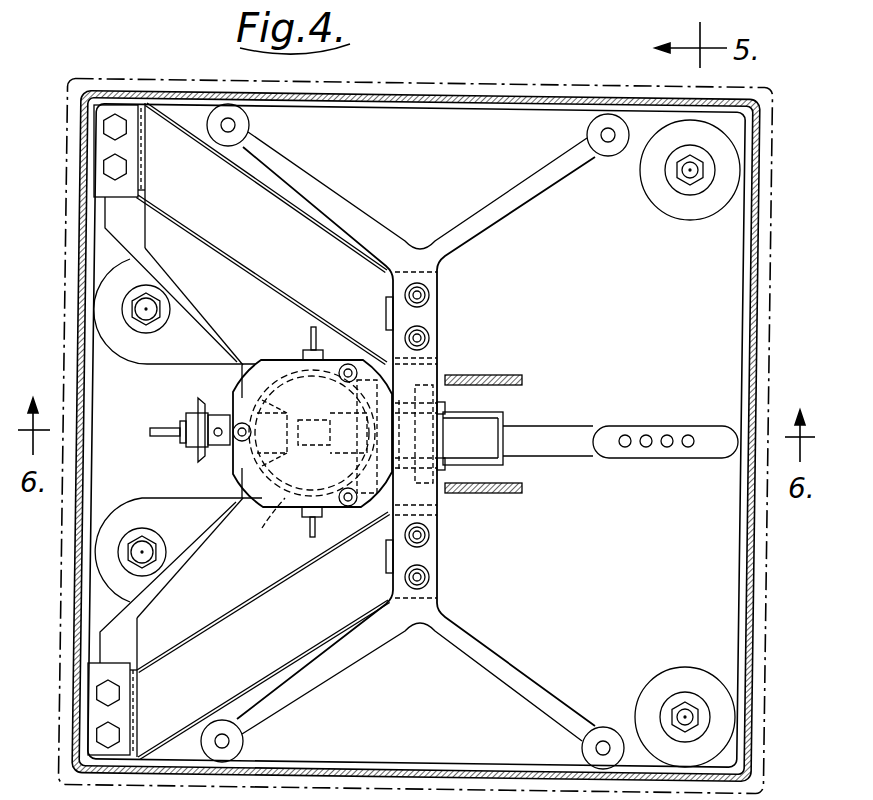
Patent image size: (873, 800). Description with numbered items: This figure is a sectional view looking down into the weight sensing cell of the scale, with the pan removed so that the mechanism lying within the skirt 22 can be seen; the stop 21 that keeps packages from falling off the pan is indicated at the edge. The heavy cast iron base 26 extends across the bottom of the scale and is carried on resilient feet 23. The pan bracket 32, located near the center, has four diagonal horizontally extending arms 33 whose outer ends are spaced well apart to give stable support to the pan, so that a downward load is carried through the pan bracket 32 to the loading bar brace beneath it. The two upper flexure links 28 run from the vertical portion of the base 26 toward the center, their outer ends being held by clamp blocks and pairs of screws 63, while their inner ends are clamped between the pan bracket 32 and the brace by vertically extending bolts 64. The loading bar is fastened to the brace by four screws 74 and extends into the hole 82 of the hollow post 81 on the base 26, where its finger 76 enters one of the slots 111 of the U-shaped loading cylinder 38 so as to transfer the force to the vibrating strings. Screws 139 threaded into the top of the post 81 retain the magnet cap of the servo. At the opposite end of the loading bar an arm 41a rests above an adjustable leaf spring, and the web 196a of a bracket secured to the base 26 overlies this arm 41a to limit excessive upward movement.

The stop 21 is at (772, 127).
The skirt 22 is at (757, 196).
The feet 23 is at (678, 188).
The base 26 is at (668, 349).
The upper flexure links 28 is at (252, 226).
The pan bracket 32 is at (440, 616).
The diagonal arms 33 is at (487, 208).
The loading cylinder 38 is at (262, 395).
The arm 41a is at (500, 432).
The screws 63 is at (113, 127).
The bolts 64 is at (429, 296).
The screws 74 is at (441, 402).
The finger 76 is at (314, 433).
The hollow post 81 is at (233, 462).
The hole 82 is at (260, 526).
The slots 111 is at (328, 405).
The screws 139 is at (352, 372).
The web 196a is at (518, 374).